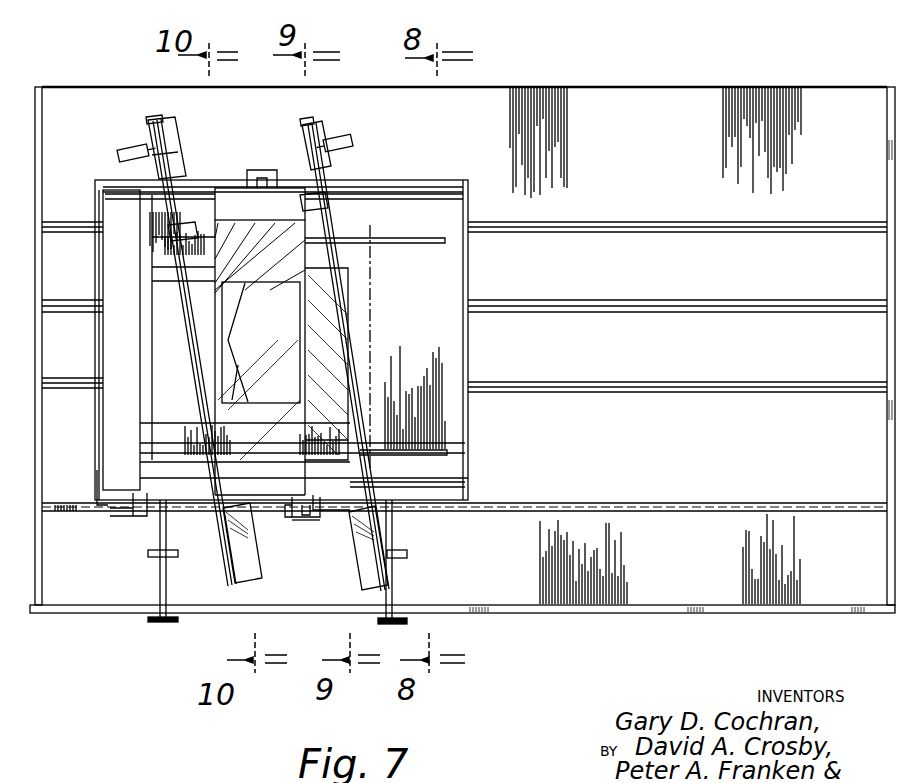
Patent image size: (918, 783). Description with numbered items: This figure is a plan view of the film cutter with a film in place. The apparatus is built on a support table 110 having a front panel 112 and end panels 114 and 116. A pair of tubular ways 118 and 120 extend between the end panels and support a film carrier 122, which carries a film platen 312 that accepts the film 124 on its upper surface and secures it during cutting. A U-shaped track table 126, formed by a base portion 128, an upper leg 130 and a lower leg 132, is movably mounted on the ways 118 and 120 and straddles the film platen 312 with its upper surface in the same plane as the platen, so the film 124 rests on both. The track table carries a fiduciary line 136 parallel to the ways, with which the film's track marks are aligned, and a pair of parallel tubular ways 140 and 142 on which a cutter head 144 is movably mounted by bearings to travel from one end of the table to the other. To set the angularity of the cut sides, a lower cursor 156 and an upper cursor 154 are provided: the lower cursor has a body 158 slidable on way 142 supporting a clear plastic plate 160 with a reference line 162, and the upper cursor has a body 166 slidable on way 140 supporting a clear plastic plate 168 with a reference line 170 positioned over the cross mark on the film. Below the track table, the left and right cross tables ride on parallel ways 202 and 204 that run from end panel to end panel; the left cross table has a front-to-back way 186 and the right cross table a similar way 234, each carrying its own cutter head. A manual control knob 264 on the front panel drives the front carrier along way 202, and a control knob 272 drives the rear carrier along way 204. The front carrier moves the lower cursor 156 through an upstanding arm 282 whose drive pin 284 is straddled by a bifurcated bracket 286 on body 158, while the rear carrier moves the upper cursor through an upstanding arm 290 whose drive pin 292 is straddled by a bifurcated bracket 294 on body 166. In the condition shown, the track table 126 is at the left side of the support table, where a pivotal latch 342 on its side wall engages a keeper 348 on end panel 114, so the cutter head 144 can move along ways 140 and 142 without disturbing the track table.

The support table 110 is at (693, 87).
The front panel 112 is at (91, 603).
The end panel 114 is at (43, 100).
The end panel 116 is at (887, 110).
The tubular way 118 is at (656, 308).
The tubular way 120 is at (650, 385).
The film carrier 122 is at (222, 313).
The film 124 is at (370, 285).
The track table 126 is at (468, 278).
The base portion 128 is at (470, 353).
The upper leg 130 is at (160, 270).
The lower leg 132 is at (147, 422).
The fiduciary line 136 is at (450, 442).
The way 140 is at (445, 202).
The way 142 is at (447, 483).
The cutter head 144 is at (102, 328).
The upper cursor 154 is at (242, 190).
The lower cursor 156 is at (240, 515).
The body 158 is at (331, 498).
The clear plastic plate 160 is at (346, 435).
The reference line 162 is at (306, 412).
The body 166 is at (310, 200).
The clear plastic plate 168 is at (202, 229).
The reference line 170 is at (261, 375).
The way 186 is at (182, 295).
The way 202 is at (648, 502).
The way 204 is at (695, 222).
The way 234 is at (332, 230).
The manual control knob 264 is at (400, 617).
The control knob 272 is at (161, 625).
The upstanding arm 282 is at (308, 526).
The drive pin 284 is at (303, 511).
The bifurcated bracket 286 is at (311, 483).
The upstanding arm 290 is at (310, 122).
The drive pin 292 is at (263, 175).
The bifurcated bracket 294 is at (260, 341).
The film platen 312 is at (238, 364).
The pivotal latch 342 is at (137, 512).
The keeper 348 is at (78, 518).